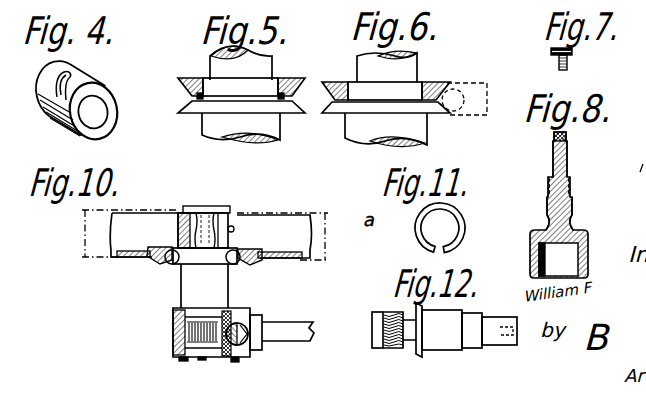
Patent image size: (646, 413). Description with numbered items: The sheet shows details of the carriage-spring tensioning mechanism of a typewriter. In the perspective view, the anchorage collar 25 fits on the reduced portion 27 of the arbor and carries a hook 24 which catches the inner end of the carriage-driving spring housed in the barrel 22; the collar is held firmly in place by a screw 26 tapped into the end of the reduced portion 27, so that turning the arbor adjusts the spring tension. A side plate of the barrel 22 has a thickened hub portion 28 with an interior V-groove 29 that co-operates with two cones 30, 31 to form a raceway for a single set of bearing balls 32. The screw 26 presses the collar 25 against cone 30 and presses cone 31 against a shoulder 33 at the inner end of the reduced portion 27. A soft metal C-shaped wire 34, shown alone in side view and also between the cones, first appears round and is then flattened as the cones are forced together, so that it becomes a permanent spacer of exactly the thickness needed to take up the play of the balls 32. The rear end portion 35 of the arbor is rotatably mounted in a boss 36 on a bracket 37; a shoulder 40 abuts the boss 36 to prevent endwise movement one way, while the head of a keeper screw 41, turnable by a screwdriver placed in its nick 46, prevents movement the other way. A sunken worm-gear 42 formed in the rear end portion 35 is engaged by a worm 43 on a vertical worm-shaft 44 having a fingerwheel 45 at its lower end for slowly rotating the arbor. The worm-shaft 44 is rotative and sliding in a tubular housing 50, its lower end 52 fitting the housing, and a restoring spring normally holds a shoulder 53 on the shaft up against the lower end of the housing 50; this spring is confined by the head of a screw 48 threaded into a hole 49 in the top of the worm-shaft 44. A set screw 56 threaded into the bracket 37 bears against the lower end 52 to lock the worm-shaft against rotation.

In FIG. 10, the barrel 22 is at (84, 234).
In FIG. 4, the hook 24 is at (57, 89).
In FIG. 10, the hook 24 is at (233, 226).
In FIG. 4, the collar 25 is at (105, 88).
In FIG. 10, the collar 25 is at (182, 212).
In FIG. 10, the screw 26 is at (196, 212).
In FIG. 5, the reduced portion of arbor 27 is at (266, 69).
In FIG. 6, the reduced portion of arbor 27 is at (387, 66).
In FIG. 10, the reduced portion of arbor 27 is at (180, 232).
In FIG. 12, the reduced portion of arbor 27 is at (492, 345).
In FIG. 6, the thickened hub portion 28 is at (462, 110).
In FIG. 10, the thickened hub portion 28 is at (158, 262).
In FIG. 10, the V-groove 29 is at (150, 248).
In FIG. 5, the cone 30 is at (198, 78).
In FIG. 6, the cone 30 is at (343, 82).
In FIG. 10, the cone 30 is at (236, 253).
In FIG. 5, the cone 31 is at (196, 108).
In FIG. 6, the cone 31 is at (378, 108).
In FIG. 10, the cone 31 is at (206, 265).
In FIG. 6, the bearing balls 32 is at (453, 92).
In FIG. 10, the bearing balls 32 is at (256, 258).
In FIG. 5, the shoulder 33 is at (278, 125).
In FIG. 6, the shoulder 33 is at (386, 130).
In FIG. 10, the shoulder 33 is at (230, 285).
In FIG. 12, the shoulder 33 is at (455, 344).
In FIG. 5, the C-shaped wire 34 is at (197, 96).
In FIG. 6, the C-shaped wire 34 is at (410, 98).
In FIG. 10, the C-shaped wire 34 is at (172, 265).
In FIG. 11, the C-shaped wire 34 is at (416, 232).
In FIG. 10, the rear end portion of arbor 35 is at (190, 346).
In FIG. 12, the rear end portion of arbor 35 is at (375, 336).
In FIG. 10, the boss 36 is at (173, 330).
In FIG. 10, the bracket 37 is at (311, 322).
In FIG. 10, the shoulder 40 is at (232, 319).
In FIG. 12, the shoulder 40 is at (418, 352).
In FIG. 10, the keeper screw 41 is at (180, 360).
In FIG. 10, the worm-gear 42 is at (187, 325).
In FIG. 12, the worm-gear 42 is at (395, 349).
In FIG. 8, the worm 43 is at (552, 185).
In FIG. 10, the worm 43 is at (216, 326).
In FIG. 8, the worm-shaft 44 is at (568, 166).
In FIG. 10, the worm-shaft 44 is at (262, 344).
In FIG. 8, the fingerwheel 45 is at (586, 255).
In FIG. 10, the nick 46 is at (200, 360).
In FIG. 7, the screw 48 is at (557, 59).
In FIG. 10, the screw 48 is at (240, 324).
In FIG. 8, the hole 49 is at (554, 138).
In FIG. 10, the housing 50 is at (250, 322).
In FIG. 8, the lower end of shaft 52 is at (573, 204).
In FIG. 8, the shoulder 53 is at (550, 220).
In FIG. 10, the set screw 56 is at (236, 361).